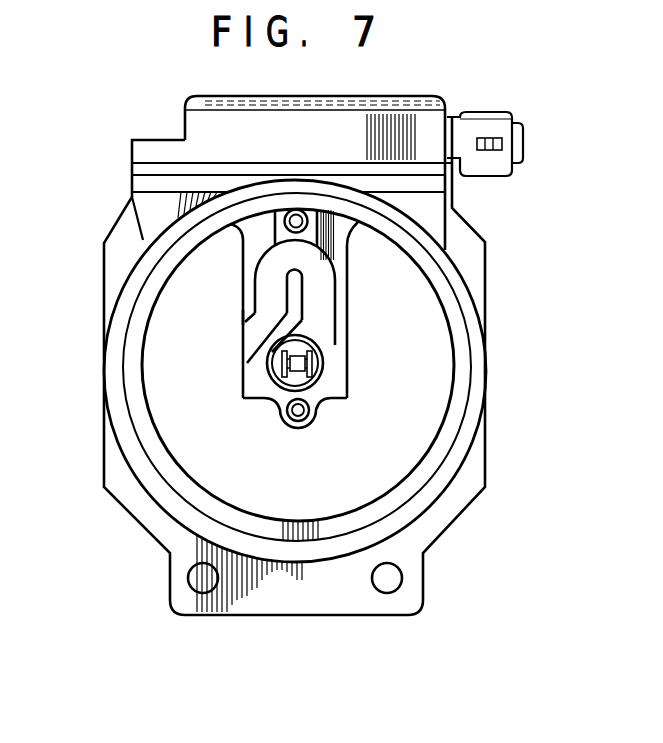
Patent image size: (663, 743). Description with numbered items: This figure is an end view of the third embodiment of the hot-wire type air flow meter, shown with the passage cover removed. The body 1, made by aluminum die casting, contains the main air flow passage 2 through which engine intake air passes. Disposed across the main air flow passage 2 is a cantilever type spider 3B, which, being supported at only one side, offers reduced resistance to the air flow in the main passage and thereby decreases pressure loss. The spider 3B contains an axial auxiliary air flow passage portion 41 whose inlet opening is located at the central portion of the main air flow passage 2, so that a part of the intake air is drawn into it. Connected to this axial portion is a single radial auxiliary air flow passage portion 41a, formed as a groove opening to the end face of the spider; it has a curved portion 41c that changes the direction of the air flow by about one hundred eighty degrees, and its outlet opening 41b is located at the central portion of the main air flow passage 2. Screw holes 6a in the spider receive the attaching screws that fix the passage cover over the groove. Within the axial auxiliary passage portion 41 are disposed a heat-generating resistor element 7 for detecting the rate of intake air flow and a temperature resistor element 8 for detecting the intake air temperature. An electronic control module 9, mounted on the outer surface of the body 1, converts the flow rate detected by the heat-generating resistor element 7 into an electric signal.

The body 1 is at (443, 520).
The main air flow passage 2 is at (183, 423).
The cantilever type spider 3B is at (243, 296).
The screw holes 6a is at (297, 209).
The heat-generating resistor element 7 is at (328, 403).
The temperature resistor element 8 is at (303, 380).
The electronic control module 9 is at (193, 121).
The axial auxiliary air flow passage portion 41 is at (267, 399).
The radial auxiliary air flow passage portion 41a is at (318, 290).
The outlet opening 41b is at (243, 343).
The curved portion 41c is at (288, 252).